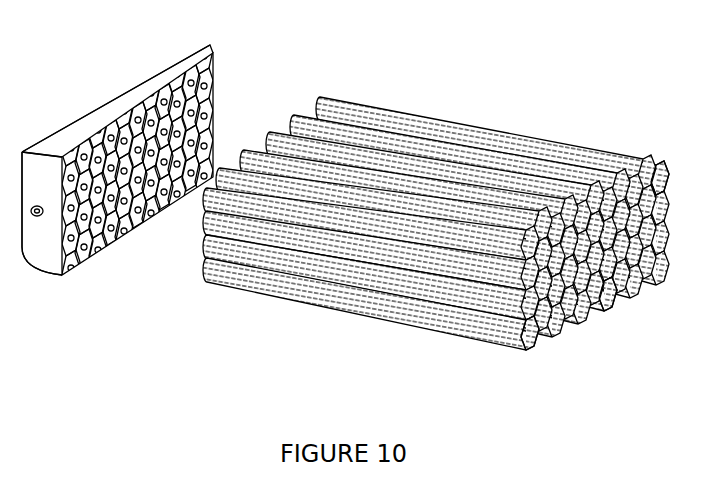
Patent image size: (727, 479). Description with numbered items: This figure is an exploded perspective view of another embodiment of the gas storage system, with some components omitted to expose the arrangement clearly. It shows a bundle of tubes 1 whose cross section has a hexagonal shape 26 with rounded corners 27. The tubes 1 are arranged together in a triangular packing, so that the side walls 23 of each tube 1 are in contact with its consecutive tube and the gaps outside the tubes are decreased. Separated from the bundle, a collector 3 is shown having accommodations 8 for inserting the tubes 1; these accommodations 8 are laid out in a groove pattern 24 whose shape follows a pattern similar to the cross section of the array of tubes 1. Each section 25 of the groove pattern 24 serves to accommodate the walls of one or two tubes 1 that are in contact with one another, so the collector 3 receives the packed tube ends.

The tubes 1 is at (451, 252).
The collector 3 is at (151, 152).
The accommodations 8 is at (136, 82).
The side walls 23 is at (606, 306).
The groove pattern 24 is at (98, 114).
The section 25 is at (112, 216).
The hexagonal shape 26 is at (535, 348).
The rounded corners 27 is at (668, 178).